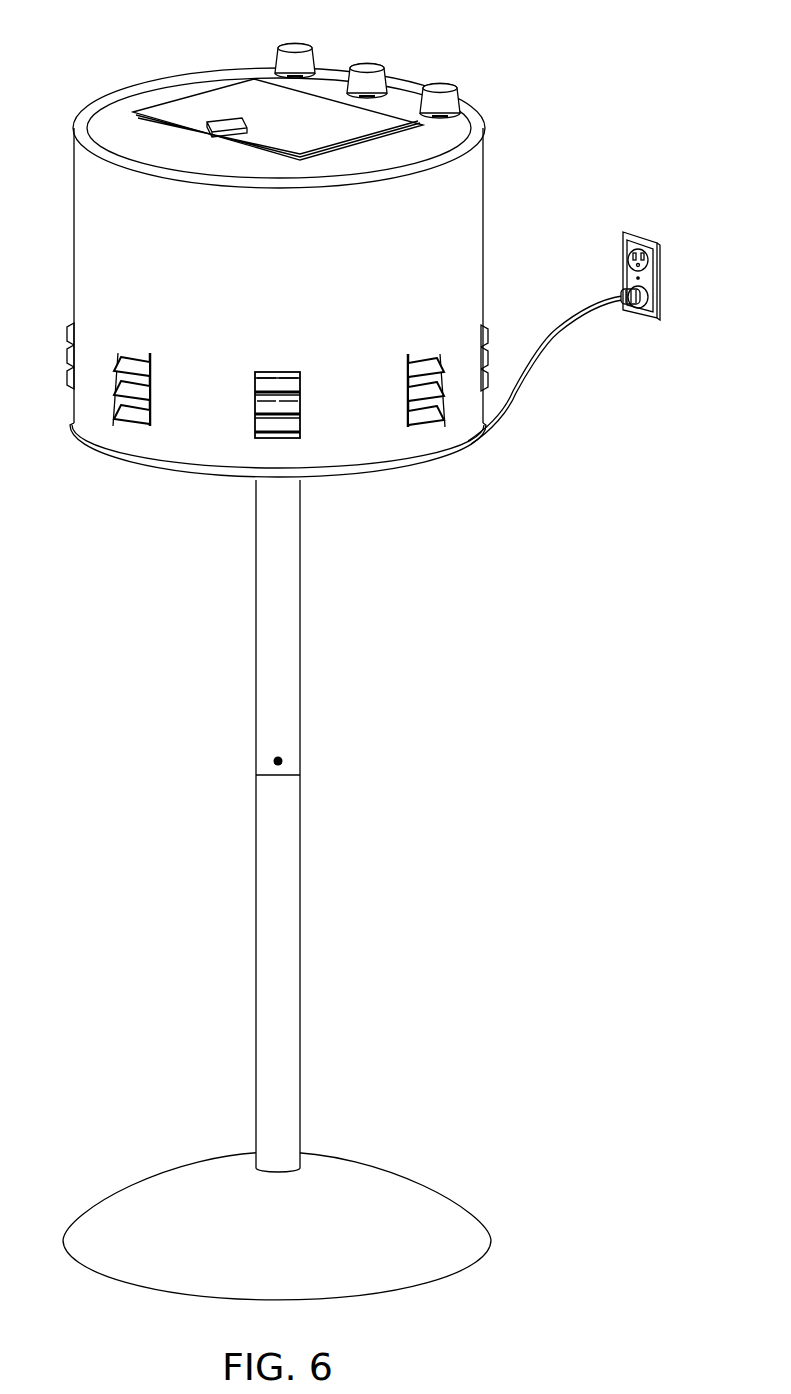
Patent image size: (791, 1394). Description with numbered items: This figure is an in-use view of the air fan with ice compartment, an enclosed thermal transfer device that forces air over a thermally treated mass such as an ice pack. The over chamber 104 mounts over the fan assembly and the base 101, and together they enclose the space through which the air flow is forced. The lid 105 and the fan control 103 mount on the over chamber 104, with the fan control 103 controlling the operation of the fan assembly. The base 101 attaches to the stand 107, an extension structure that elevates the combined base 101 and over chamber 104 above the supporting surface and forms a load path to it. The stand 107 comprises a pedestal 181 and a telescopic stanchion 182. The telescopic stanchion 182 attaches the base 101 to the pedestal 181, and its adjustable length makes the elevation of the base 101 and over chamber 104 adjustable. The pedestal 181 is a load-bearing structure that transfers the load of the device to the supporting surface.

The base 101 is at (387, 470).
The fan control 103 is at (472, 65).
The over chamber 104 is at (484, 213).
The lid 105 is at (243, 102).
The stand 107 is at (332, 875).
The pedestal 181 is at (437, 1193).
The telescopic stanchion 182 is at (300, 683).